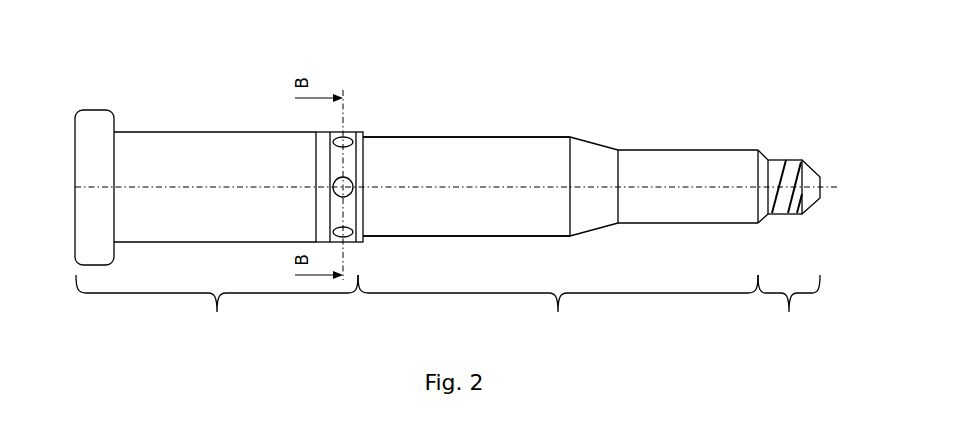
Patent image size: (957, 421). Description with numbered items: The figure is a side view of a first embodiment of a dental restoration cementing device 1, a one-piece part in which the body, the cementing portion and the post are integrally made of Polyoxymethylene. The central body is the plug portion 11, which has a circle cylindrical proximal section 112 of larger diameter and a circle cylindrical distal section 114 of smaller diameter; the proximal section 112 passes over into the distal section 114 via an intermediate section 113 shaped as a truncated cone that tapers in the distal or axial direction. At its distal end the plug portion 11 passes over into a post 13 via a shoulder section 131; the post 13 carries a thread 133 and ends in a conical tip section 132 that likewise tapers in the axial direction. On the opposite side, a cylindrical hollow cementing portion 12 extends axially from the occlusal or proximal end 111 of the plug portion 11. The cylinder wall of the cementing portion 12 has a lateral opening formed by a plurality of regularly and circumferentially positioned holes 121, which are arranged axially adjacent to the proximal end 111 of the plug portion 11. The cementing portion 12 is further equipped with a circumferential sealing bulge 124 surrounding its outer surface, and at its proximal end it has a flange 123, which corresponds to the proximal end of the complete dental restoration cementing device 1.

The dental restoration cementing device 1 is at (93, 63).
The plug portion 11 is at (558, 239).
The cementing portion 12 is at (217, 237).
The post 13 is at (789, 245).
The proximal end of the plug portion 111 is at (365, 160).
The proximal section 112 is at (493, 160).
The intermediate section 113 is at (583, 160).
The distal section 114 is at (681, 158).
The holes 121 is at (360, 133).
The flange 123 is at (105, 118).
The sealing bulge 124 is at (318, 143).
The shoulder section 131 is at (764, 152).
The conical tip section 132 is at (815, 177).
The thread 133 is at (790, 178).